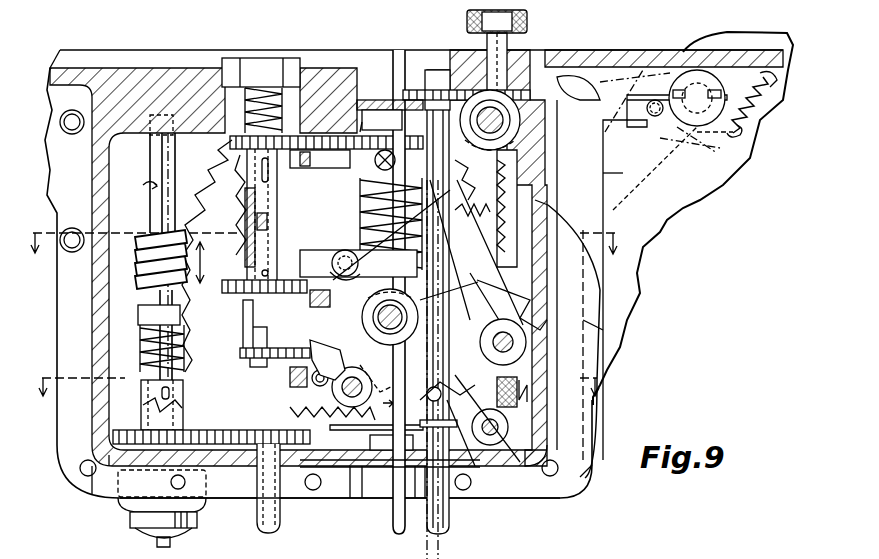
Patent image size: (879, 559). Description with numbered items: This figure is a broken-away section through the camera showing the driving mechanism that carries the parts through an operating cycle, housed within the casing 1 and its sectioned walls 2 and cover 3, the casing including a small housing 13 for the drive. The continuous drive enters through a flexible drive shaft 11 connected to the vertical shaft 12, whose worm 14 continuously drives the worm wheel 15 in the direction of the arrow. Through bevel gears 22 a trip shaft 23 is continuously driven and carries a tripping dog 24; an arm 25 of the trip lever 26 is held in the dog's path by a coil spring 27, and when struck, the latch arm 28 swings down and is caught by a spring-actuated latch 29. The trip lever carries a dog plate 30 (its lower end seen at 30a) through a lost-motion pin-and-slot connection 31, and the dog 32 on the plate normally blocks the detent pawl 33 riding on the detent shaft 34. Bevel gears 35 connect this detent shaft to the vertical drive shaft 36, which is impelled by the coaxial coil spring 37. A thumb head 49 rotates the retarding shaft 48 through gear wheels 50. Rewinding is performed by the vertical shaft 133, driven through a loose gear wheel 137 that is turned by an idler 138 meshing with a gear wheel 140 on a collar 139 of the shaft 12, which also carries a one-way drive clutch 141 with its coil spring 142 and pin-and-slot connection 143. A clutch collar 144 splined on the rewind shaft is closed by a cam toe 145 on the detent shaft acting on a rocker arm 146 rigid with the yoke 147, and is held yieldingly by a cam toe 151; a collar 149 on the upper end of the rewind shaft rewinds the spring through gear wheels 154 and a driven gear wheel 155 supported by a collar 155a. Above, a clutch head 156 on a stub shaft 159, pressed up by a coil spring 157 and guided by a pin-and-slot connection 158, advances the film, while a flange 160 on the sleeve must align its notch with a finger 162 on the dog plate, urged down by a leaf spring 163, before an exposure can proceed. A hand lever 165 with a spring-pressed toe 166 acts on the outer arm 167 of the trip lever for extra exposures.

The casing 1 is at (68, 190).
The housing 2 is at (165, 68).
The cover plate 3 is at (627, 52).
The flexible drive shaft 11 is at (157, 543).
The vertical shaft 12 is at (158, 172).
The small housing 13 is at (97, 290).
The worm 14 is at (155, 240).
The worm wheel 15 is at (205, 347).
The bevel gears 22 is at (607, 74).
The trip shaft 23 is at (527, 70).
The tripping dog 24 is at (485, 160).
The arm 25 is at (492, 217).
The trip lever 26 is at (600, 332).
The coil spring 27 is at (620, 176).
The latch arm 28 is at (477, 500).
The spring-actuated latch 29 is at (522, 502).
The dog plate 30 is at (542, 300).
The lever end 30a is at (580, 477).
The pin-and-slot connection 31 is at (532, 297).
The dog 32 is at (437, 372).
The detent pawl 33 is at (440, 357).
The detent shaft 34 is at (422, 292).
The bevel gears 35 is at (412, 337).
The vertical drive shaft 36 is at (398, 95).
The coil spring 37 is at (360, 214).
The retarding shaft 48 is at (441, 72).
The thumb head 49 is at (528, 24).
The gear wheels 50 is at (487, 45).
The vertical shaft 133 is at (284, 527).
The gear wheel 137 is at (236, 446).
The idler 138 is at (232, 443).
The collar 139 is at (140, 420).
The gear wheel 140 is at (118, 490).
The one-way drive clutch 141 is at (183, 388).
The coil spring 142 is at (135, 337).
The pin-and-slot connection 143 is at (140, 358).
The clutch collar 144 is at (262, 342).
The cam toe 145 is at (360, 352).
The rocker arm 146 is at (345, 345).
The yoke 147 is at (332, 477).
The collar 149 is at (245, 217).
The cam toe 151 is at (332, 430).
The gear wheels 154 is at (347, 177).
The driven gear wheel 155 is at (370, 110).
The collar 155a is at (380, 105).
The clutch head 156 is at (262, 70).
The coil spring 157 is at (250, 70).
The pin-and-slot connection 158 is at (262, 163).
The stub shaft 159 is at (252, 199).
The flange 160 is at (238, 280).
The finger 162 is at (330, 266).
The leaf spring 163 is at (372, 252).
The hand lever 165 is at (777, 102).
The spring-pressed toe 166 is at (630, 112).
The outer arm 167 is at (605, 212).